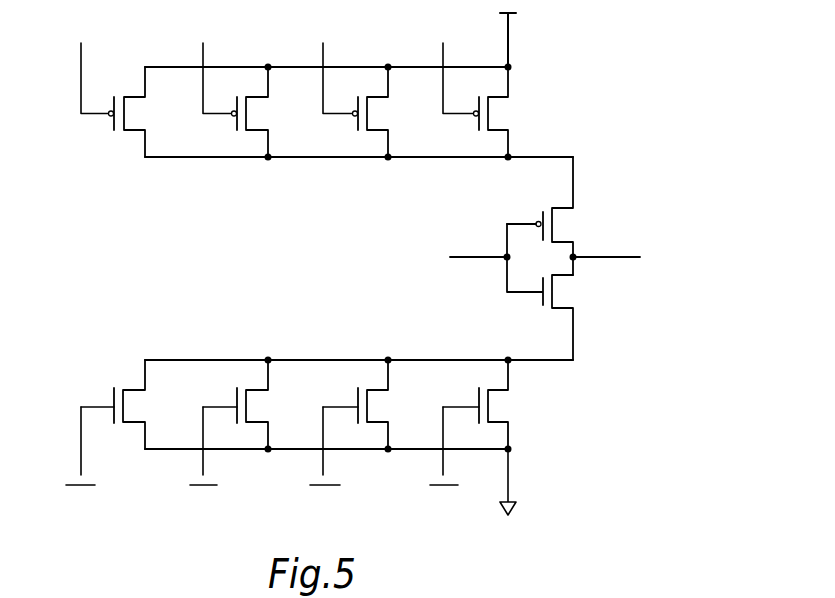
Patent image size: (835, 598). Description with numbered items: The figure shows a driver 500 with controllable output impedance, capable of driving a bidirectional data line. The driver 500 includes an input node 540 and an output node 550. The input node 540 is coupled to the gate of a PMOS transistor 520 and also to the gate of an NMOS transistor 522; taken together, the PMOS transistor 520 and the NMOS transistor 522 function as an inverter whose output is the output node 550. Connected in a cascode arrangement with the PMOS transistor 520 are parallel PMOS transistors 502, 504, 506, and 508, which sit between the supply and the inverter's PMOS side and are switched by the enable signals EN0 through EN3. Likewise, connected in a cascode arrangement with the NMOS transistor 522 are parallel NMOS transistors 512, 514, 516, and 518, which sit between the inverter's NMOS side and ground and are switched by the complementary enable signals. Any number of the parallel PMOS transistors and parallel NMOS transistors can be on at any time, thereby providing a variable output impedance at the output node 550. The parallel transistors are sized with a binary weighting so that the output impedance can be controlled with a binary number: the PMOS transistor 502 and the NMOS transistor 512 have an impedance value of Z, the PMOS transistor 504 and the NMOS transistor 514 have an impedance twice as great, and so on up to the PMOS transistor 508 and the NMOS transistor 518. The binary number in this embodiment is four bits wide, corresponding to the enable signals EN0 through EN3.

The driver 500 is at (682, 56).
The PMOS transistor 502 is at (121, 132).
The PMOS transistor 504 is at (243, 132).
The PMOS transistor 506 is at (364, 132).
The PMOS transistor 508 is at (484, 132).
The NMOS transistor 512 is at (122, 386).
The NMOS transistor 514 is at (243, 386).
The NMOS transistor 516 is at (365, 386).
The NMOS transistor 518 is at (485, 386).
The PMOS transistor 520 is at (549, 210).
The NMOS transistor 522 is at (546, 271).
The input node 540 is at (460, 256).
The output node 550 is at (627, 256).